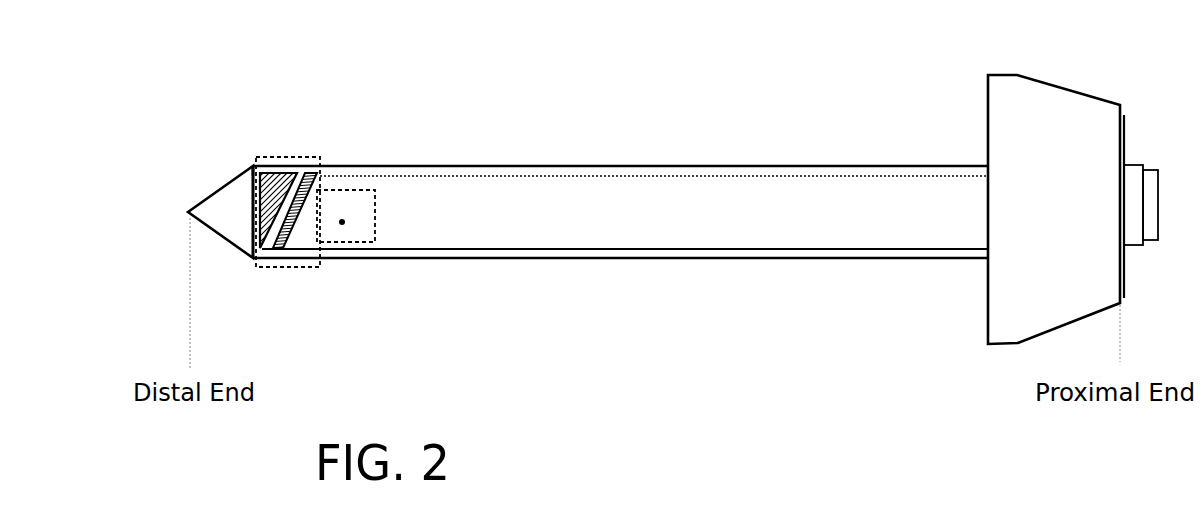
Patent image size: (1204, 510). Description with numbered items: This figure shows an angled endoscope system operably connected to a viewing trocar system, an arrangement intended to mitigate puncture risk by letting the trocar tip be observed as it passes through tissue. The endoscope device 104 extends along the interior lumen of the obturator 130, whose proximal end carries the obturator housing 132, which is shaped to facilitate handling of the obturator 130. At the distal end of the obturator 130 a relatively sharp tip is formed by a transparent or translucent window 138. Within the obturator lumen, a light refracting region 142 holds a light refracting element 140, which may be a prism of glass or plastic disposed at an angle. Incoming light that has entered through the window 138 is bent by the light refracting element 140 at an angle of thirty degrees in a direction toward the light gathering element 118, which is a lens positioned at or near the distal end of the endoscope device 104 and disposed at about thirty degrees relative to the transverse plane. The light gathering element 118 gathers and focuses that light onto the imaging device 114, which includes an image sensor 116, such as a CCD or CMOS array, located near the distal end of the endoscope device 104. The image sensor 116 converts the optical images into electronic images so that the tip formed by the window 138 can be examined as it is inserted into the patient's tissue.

The endoscope device 104 is at (620, 178).
The imaging device 114 is at (405, 176).
The image sensor 116 is at (416, 260).
The light gathering element 118 is at (298, 162).
The obturator 130 is at (620, 299).
The obturator housing 132 is at (1020, 208).
The window 138 is at (168, 196).
The light refracting element 140 is at (160, 108).
The light refracting region 142 is at (341, 257).